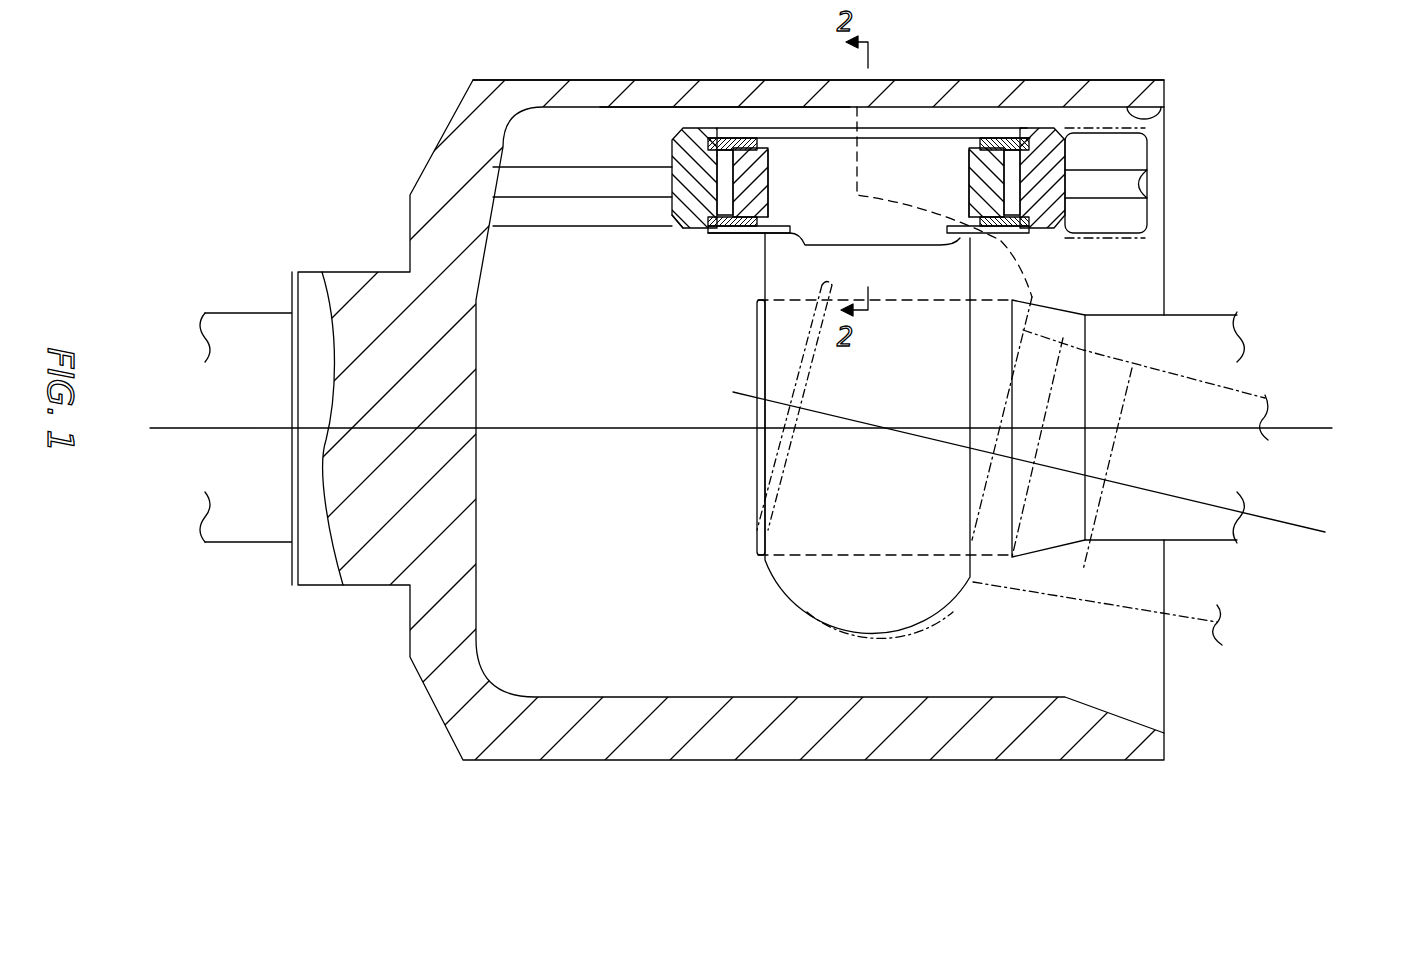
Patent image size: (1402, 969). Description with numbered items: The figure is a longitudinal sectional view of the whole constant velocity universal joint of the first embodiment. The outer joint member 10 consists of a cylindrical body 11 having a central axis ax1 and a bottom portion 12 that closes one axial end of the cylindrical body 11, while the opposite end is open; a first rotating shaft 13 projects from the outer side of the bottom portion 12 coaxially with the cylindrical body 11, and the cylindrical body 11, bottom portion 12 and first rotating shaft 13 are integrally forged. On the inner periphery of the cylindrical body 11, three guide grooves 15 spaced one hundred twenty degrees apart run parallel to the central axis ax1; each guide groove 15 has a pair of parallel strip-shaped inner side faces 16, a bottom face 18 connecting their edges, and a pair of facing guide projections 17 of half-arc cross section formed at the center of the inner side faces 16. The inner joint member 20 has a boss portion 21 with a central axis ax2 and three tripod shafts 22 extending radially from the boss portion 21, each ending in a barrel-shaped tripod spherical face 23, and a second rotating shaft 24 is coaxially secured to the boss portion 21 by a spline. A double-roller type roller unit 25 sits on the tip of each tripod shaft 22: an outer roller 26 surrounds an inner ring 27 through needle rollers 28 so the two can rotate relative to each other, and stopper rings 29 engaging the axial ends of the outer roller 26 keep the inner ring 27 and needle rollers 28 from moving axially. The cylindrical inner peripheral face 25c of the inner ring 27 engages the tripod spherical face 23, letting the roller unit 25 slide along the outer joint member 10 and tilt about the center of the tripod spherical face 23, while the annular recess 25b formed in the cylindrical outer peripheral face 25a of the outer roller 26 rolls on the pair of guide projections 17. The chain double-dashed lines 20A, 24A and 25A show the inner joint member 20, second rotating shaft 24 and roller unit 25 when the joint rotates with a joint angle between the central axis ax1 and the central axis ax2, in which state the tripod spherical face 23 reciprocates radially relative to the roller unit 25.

The outer joint member 10 is at (605, 78).
The cylindrical body 11 is at (915, 90).
The bottom portion 12 is at (430, 175).
The first rotating shaft 13 is at (233, 323).
The guide groove 15 is at (705, 110).
The inner side face 16 is at (1165, 140).
The guide projection 17 is at (1165, 182).
The bottom face 18 is at (1170, 118).
The inner joint member 20 is at (788, 620).
The inner joint member in angled position 20A is at (1035, 290).
The boss portion 21 is at (780, 347).
The tripod shaft 22 is at (793, 118).
The tripod spherical face 23 is at (985, 120).
The second rotating shaft 24 is at (1217, 322).
The second rotating shaft in angled position 24A is at (1240, 385).
The roller unit 25 is at (1040, 116).
The roller unit in angled position 25A is at (1170, 216).
The cylindrical outer peripheral face 25a is at (680, 216).
The annular recess 25b is at (670, 200).
The cylindrical inner peripheral face 25c is at (765, 228).
The outer roller 26 is at (672, 148).
The inner ring 27 is at (749, 218).
The needle roller 28 is at (725, 216).
The stopper ring 29 is at (728, 235).
The central axis ax1 is at (150, 425).
The central axis ax2 is at (1318, 432).